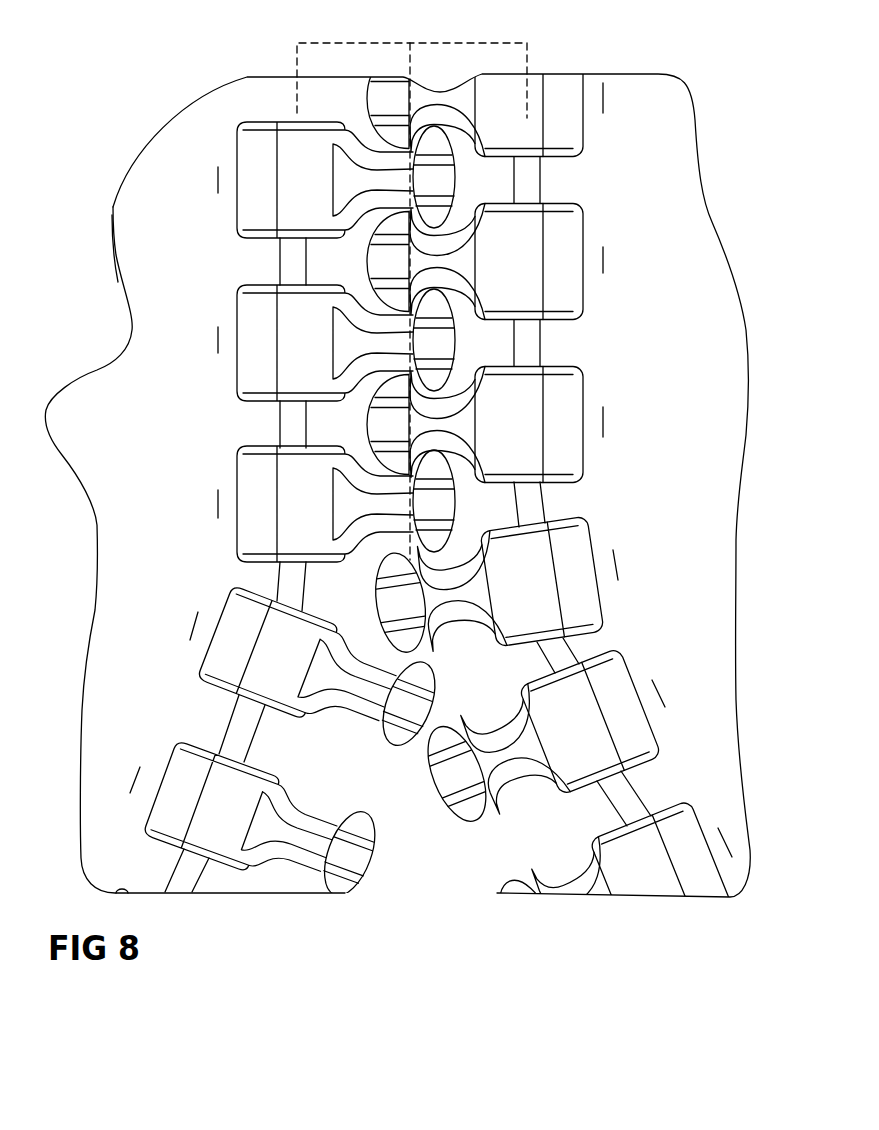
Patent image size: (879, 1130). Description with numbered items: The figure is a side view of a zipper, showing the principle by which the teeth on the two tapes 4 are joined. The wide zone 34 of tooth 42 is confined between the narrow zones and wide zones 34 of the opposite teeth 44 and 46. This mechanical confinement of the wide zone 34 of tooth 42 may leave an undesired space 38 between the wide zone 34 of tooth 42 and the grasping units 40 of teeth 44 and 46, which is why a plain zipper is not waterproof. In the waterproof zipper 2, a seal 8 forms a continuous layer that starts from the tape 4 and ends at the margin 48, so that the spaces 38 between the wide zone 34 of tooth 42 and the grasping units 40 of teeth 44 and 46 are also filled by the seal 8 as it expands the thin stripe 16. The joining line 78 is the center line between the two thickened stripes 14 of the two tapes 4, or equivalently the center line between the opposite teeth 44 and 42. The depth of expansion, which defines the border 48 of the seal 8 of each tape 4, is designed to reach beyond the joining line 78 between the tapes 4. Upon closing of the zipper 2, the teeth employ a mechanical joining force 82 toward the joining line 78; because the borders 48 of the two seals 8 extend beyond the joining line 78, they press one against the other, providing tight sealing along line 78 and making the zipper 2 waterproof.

The waterproof zipper 2 is at (279, 43).
The tape 4 is at (111, 142).
The seal 8 is at (473, 680).
The thickened stripe 14 is at (290, 259).
The thin stripe 16 is at (117, 236).
The wide zone 34 is at (237, 380).
The space 38 is at (340, 370).
The grasping unit 40 is at (530, 277).
The tooth 42 is at (346, 343).
The tooth 44 is at (475, 262).
The tooth 46 is at (475, 425).
The margin 48 is at (353, 762).
The joining line 78 is at (411, 76).
The mechanical joining force 82 is at (441, 567).